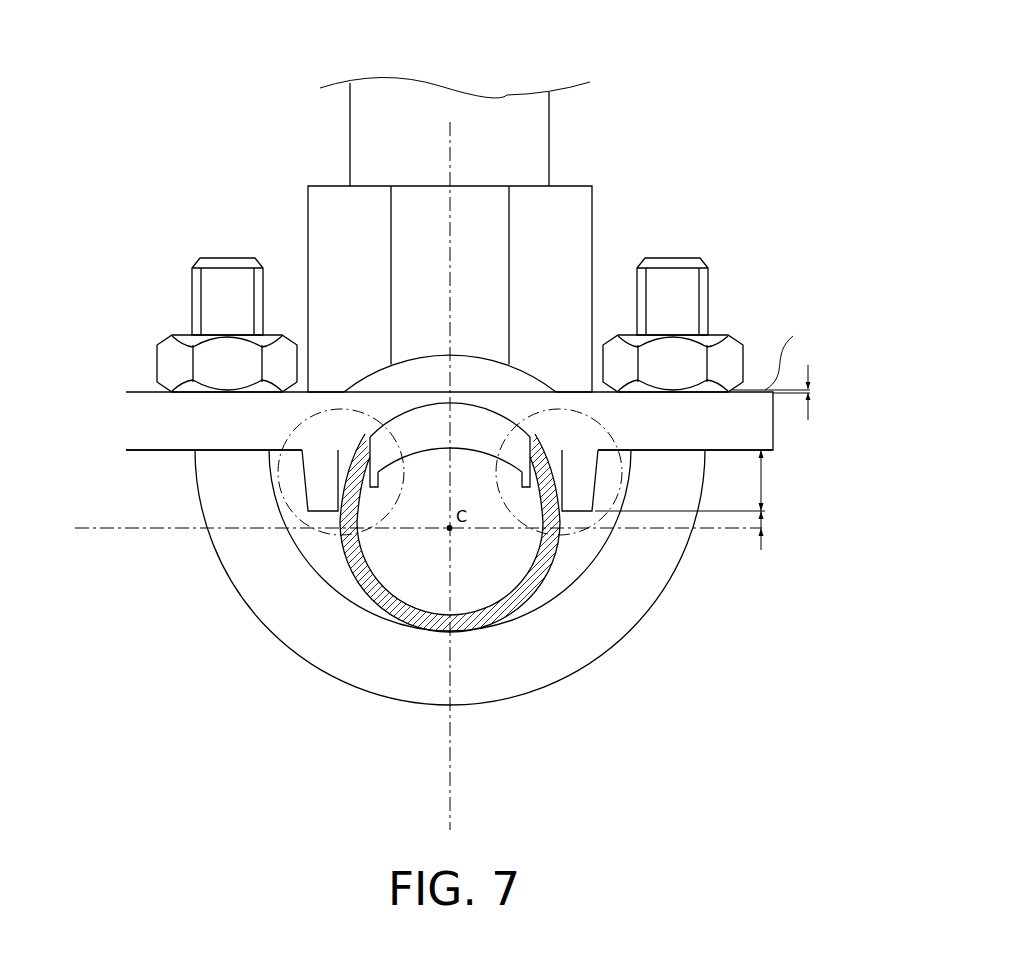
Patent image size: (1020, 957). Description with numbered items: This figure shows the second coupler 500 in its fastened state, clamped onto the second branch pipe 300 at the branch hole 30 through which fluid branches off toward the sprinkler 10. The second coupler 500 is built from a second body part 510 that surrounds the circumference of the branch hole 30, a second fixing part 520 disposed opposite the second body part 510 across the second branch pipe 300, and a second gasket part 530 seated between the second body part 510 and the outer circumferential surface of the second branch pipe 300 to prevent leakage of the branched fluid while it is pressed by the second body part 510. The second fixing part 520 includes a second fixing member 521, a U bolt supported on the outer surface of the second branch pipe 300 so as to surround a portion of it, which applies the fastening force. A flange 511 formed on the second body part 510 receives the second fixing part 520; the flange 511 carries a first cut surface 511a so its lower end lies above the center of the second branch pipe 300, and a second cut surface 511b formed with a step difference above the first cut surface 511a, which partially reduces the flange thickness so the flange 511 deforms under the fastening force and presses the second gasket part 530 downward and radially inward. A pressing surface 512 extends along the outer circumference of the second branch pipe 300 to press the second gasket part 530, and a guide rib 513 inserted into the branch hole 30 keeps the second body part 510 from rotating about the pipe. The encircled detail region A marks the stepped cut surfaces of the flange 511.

The sprinkler 10 is at (503, 115).
The second coupler 500 is at (733, 71).
The second body part 510 is at (583, 215).
The flange 511 is at (466, 538).
The first cut surface 511a is at (318, 514).
The second cut surface 511b is at (270, 460).
The pressing surface 512 is at (360, 560).
The guide rib 513 is at (482, 427).
The second fixing part 520 is at (450, 611).
The second fixing member 521 is at (505, 673).
The second gasket part 530 is at (520, 472).
The branch hole 30 is at (520, 552).
The second branch pipe 300 is at (449, 579).
The detail region A is at (273, 493).